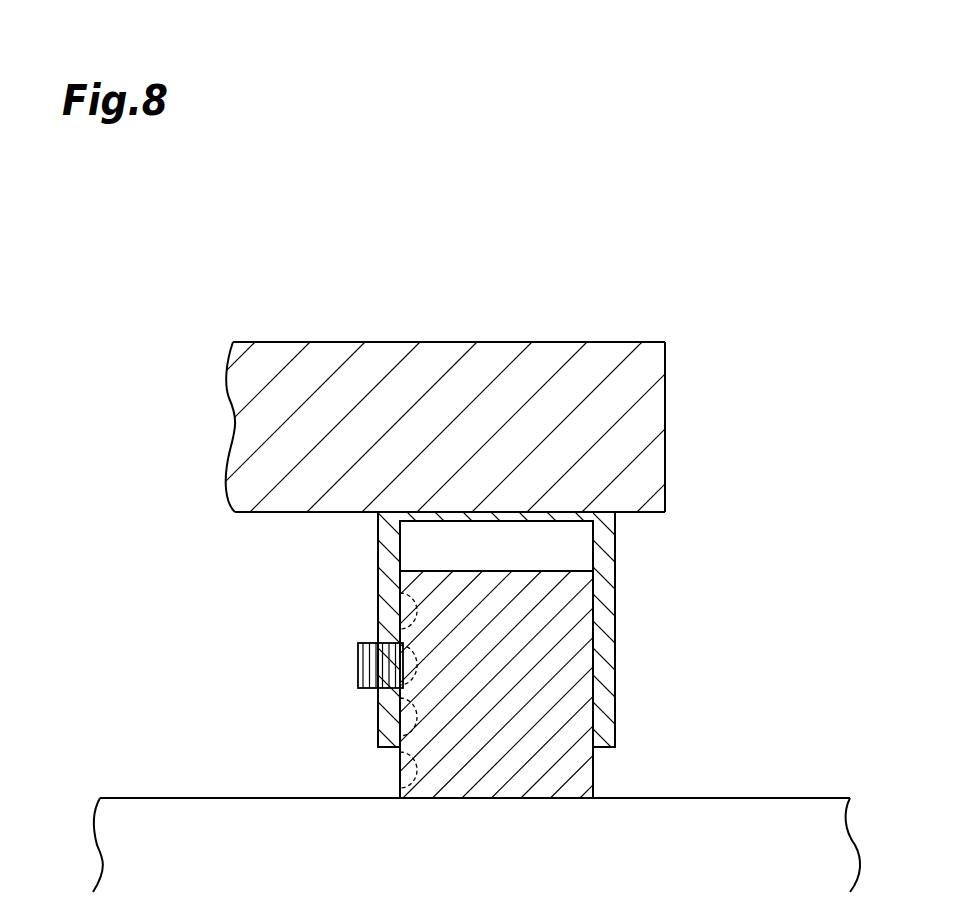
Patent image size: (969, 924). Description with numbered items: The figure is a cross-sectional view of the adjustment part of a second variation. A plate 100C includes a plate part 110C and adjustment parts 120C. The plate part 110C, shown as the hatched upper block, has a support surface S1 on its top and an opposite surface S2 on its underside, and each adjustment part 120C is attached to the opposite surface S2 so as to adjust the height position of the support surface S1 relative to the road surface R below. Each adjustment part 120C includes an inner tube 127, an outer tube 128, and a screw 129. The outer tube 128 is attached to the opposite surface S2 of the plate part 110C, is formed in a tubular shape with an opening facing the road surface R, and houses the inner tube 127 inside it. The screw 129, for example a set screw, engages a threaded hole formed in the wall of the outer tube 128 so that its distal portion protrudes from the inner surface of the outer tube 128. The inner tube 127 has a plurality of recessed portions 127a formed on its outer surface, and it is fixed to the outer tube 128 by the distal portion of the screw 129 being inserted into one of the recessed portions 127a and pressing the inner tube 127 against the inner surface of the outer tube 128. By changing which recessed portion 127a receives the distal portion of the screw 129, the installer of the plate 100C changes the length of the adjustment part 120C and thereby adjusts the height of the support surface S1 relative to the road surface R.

The plate 100C is at (681, 313).
The plate part 110C is at (446, 414).
The adjustment part 120C is at (502, 655).
The inner tube 127 is at (572, 763).
The recessed portion 127a is at (413, 613).
The outer tube 128 is at (605, 548).
The screw 129 is at (357, 665).
The support surface S1 is at (279, 342).
The opposite surface S2 is at (287, 514).
The road surface R is at (765, 797).